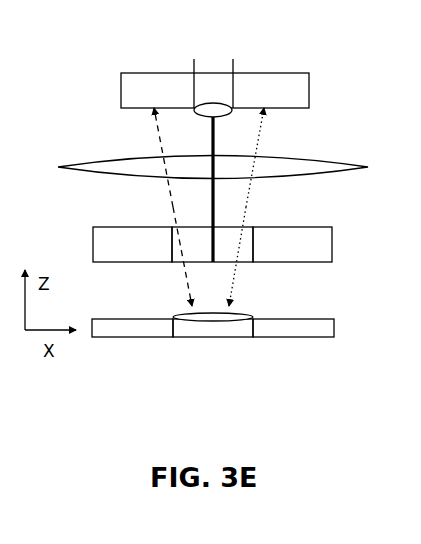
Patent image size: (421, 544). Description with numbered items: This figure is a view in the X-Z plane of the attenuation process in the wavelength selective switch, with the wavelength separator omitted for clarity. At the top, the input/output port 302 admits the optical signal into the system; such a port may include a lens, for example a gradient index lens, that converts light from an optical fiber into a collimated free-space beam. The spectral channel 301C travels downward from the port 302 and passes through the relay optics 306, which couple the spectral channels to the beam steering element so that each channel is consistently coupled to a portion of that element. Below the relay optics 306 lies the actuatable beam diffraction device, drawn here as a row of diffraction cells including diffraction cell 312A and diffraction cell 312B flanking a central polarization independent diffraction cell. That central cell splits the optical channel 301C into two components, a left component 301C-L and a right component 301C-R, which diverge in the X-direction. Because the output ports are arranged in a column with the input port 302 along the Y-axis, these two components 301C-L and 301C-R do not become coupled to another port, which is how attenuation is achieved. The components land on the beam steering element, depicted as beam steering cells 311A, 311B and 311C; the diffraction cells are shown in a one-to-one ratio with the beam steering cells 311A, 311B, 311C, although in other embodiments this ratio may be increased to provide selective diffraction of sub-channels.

The input/output port 302 is at (213, 92).
The relay optics 306 is at (323, 156).
The spectral channel 301C is at (207, 143).
The left diffracted component 301C-L is at (170, 202).
The right diffracted component 301C-R is at (265, 196).
The diffraction cell 312A is at (132, 244).
The diffraction cell 312B is at (292, 244).
The beam steering cell 311A is at (133, 337).
The beam steering cell 311B is at (293, 337).
The beam steering cell 311C is at (228, 245).